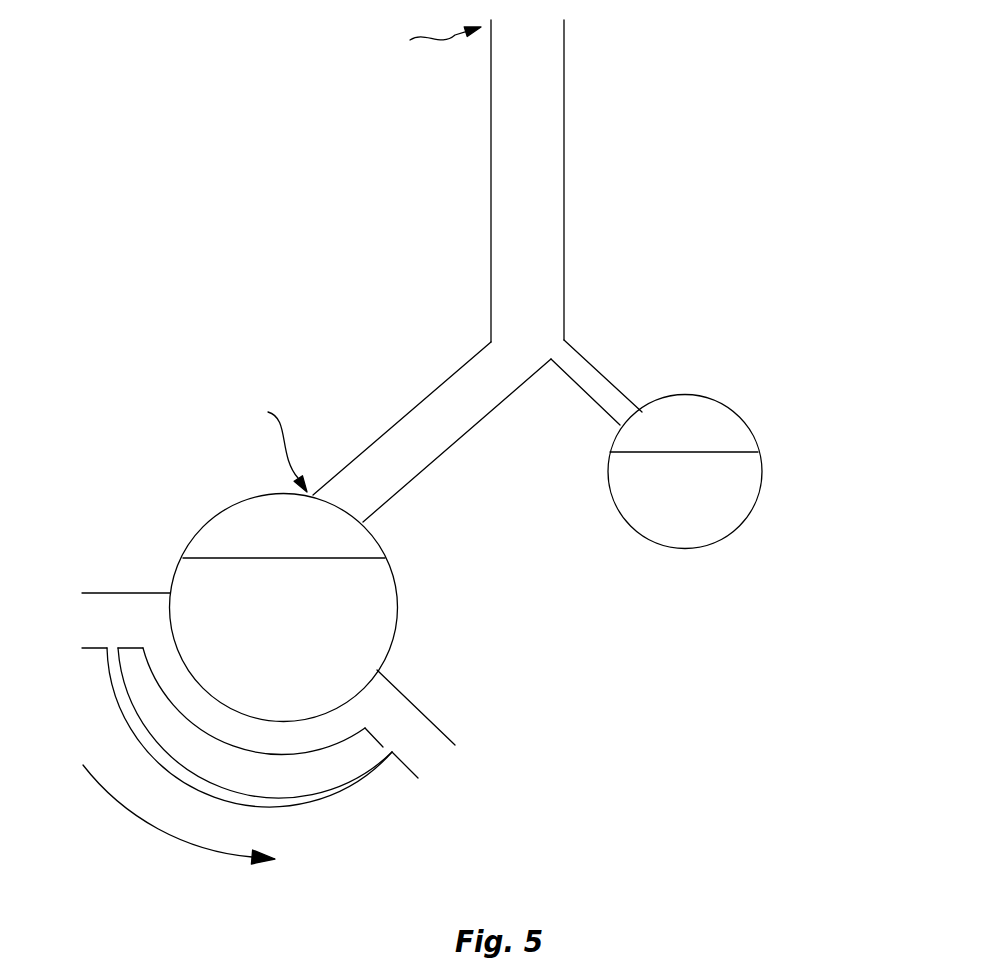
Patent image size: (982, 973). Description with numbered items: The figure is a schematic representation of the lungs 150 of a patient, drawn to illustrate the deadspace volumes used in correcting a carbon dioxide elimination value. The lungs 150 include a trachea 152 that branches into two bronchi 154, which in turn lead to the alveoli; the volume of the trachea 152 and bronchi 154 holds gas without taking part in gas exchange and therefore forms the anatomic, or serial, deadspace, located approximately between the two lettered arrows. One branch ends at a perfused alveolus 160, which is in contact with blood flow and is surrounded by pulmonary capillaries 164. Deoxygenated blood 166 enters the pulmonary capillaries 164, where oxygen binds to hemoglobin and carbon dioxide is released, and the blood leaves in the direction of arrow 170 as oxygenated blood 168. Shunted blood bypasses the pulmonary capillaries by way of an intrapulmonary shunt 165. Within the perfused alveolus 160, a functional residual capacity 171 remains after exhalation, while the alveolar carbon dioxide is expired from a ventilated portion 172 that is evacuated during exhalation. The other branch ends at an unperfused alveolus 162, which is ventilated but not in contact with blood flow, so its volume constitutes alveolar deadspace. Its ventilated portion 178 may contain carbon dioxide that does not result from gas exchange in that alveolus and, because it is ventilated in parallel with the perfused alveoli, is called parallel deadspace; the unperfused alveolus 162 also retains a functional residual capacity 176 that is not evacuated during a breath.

The lungs 150 is at (792, 317).
The trachea 152 is at (540, 100).
The bronchi 154 is at (593, 382).
The perfused alveoli 160 is at (240, 602).
The unperfused alveoli 162 is at (732, 528).
The pulmonary capillaries 164 is at (242, 738).
The intrapulmonary shunt 165 is at (282, 795).
The deoxygenated blood 166 is at (92, 637).
The oxygenated blood 168 is at (403, 750).
The arrow 170 is at (148, 822).
The functional residual capacity 171 is at (378, 590).
The ventilated portion of perfused alveoli 172 is at (367, 542).
The functional residual capacity of unperfused alveoli 176 is at (640, 517).
The ventilated portion of unperfused alveoli 178 is at (690, 403).